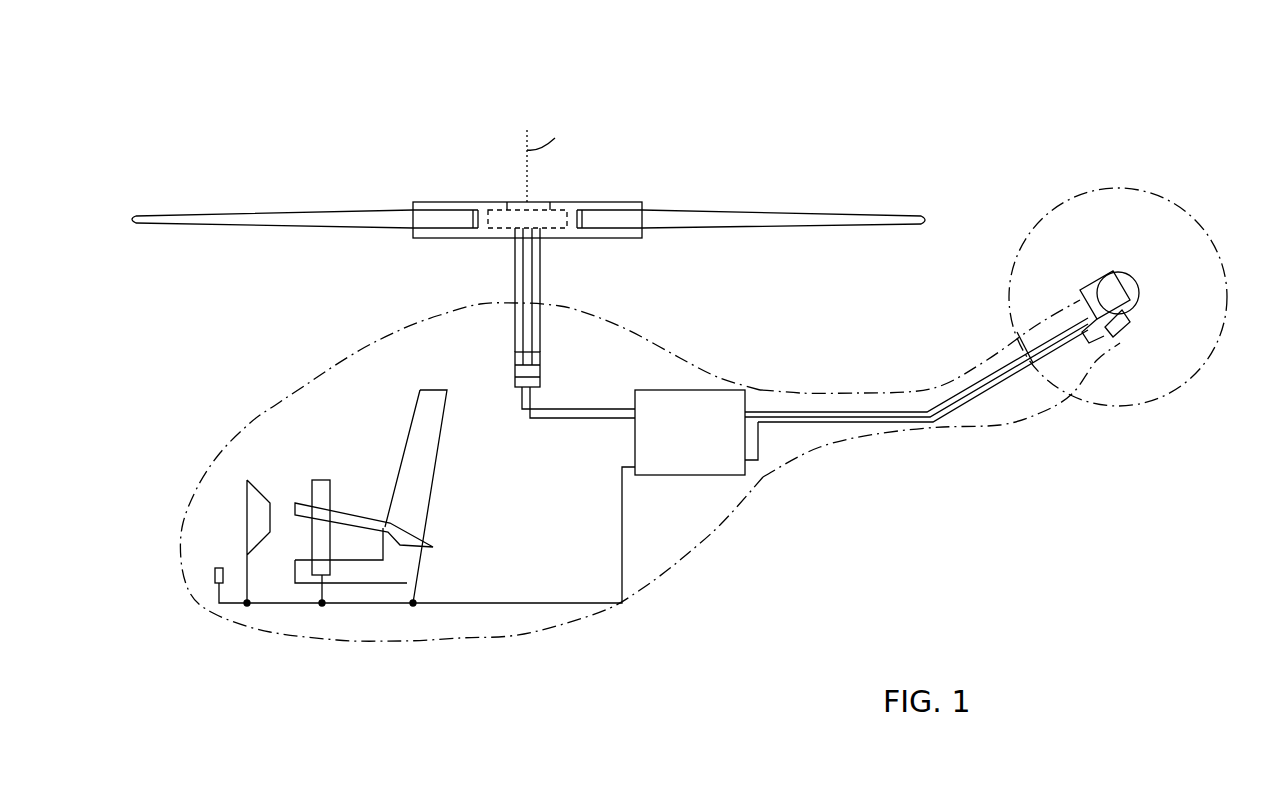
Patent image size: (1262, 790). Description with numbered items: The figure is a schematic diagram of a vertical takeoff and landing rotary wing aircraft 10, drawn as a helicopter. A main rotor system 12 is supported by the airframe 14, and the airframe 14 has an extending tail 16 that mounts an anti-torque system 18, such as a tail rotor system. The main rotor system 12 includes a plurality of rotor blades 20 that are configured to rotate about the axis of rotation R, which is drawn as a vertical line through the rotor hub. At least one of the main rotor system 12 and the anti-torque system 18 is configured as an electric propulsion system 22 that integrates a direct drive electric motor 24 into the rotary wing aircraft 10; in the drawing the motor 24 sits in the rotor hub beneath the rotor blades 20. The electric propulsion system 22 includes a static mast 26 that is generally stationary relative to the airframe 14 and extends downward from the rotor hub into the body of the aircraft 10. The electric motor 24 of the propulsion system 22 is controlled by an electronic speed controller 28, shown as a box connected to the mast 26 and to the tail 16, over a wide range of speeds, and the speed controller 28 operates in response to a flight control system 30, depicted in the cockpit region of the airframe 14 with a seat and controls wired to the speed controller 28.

The rotary wing aircraft 10 is at (325, 90).
The main rotor system 12 is at (497, 178).
The airframe 14 is at (647, 344).
The extending tail 16 is at (886, 433).
The anti-torque system 18 is at (1190, 196).
The rotor blades 20 is at (713, 210).
The electric propulsion system 22 is at (560, 256).
The direct drive electric motor 24 is at (538, 212).
The static mast 26 is at (515, 279).
The electronic speed controller 28 is at (748, 392).
The flight control system 30 is at (283, 473).